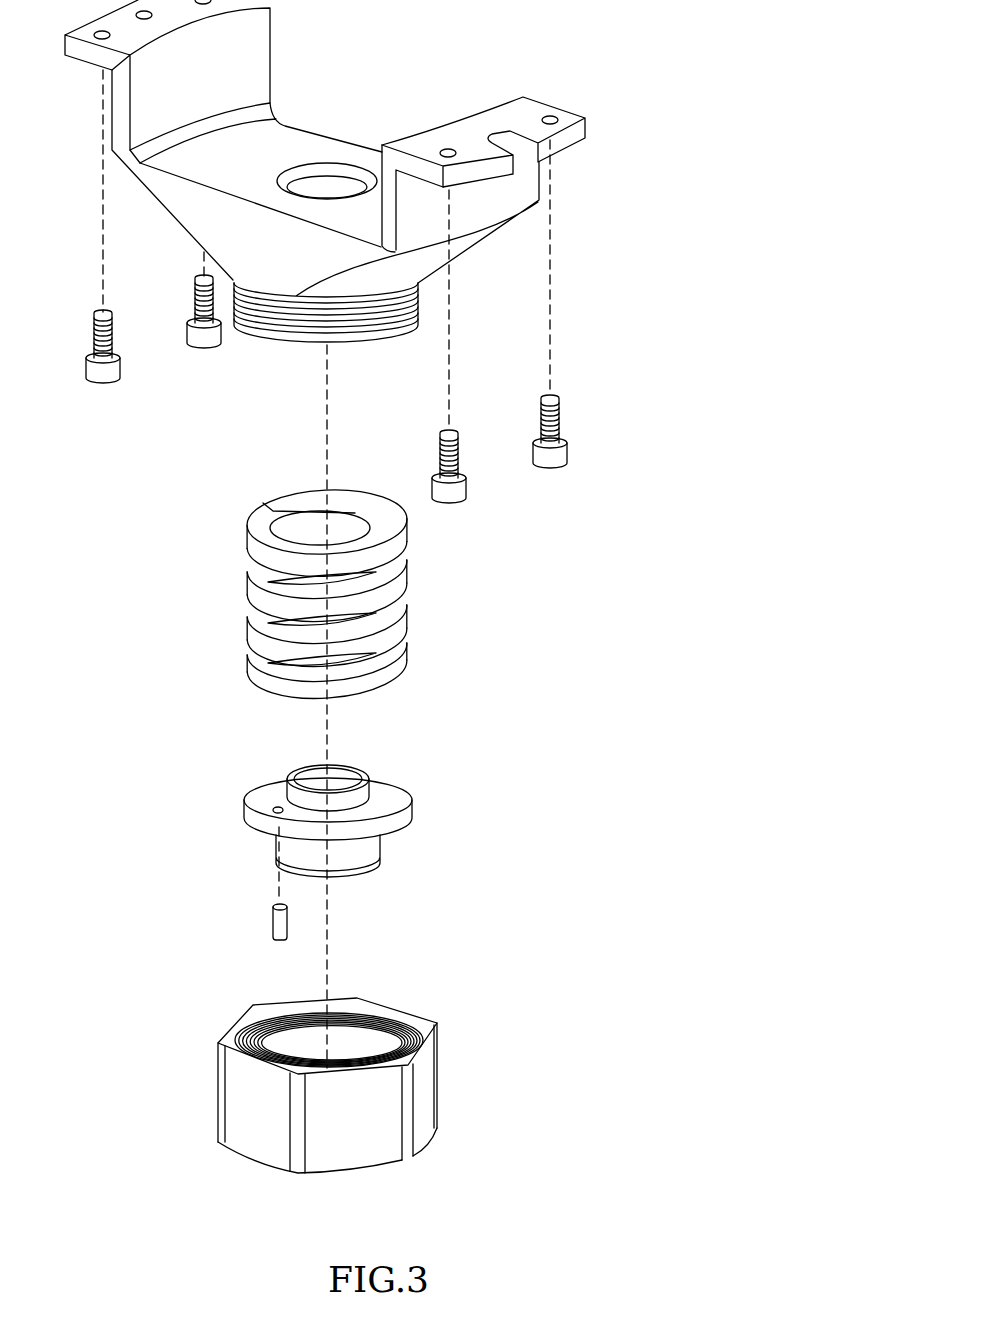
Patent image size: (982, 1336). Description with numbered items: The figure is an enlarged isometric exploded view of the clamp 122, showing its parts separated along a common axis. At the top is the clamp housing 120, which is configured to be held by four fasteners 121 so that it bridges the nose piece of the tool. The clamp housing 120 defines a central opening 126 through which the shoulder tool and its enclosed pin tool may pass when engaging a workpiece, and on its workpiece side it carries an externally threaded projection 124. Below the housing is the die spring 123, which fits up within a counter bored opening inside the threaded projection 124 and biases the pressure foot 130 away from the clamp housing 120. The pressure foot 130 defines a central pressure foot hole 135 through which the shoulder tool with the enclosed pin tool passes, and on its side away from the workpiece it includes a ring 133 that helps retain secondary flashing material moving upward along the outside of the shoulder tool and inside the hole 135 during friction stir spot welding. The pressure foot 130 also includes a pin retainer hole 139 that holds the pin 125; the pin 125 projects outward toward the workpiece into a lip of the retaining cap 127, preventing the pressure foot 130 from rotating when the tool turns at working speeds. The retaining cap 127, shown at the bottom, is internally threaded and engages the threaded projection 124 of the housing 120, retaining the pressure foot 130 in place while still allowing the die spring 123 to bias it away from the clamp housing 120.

The clamp housing 120 is at (528, 103).
The fasteners 121 is at (562, 432).
The clamp 122 is at (745, 548).
The die spring 123 is at (407, 575).
The threaded projection 124 is at (293, 328).
The pin 125 is at (276, 920).
The central opening 126 is at (330, 178).
The retaining cap 127 is at (424, 1080).
The pressure foot 130 is at (357, 800).
The ring 133 is at (362, 772).
The pressure foot hole 135 is at (292, 734).
The pin retainer hole 139 is at (278, 808).